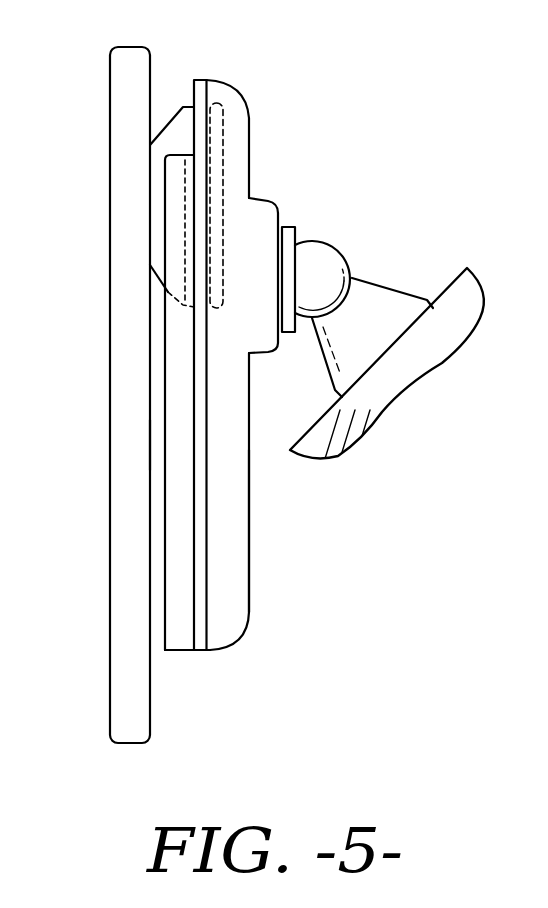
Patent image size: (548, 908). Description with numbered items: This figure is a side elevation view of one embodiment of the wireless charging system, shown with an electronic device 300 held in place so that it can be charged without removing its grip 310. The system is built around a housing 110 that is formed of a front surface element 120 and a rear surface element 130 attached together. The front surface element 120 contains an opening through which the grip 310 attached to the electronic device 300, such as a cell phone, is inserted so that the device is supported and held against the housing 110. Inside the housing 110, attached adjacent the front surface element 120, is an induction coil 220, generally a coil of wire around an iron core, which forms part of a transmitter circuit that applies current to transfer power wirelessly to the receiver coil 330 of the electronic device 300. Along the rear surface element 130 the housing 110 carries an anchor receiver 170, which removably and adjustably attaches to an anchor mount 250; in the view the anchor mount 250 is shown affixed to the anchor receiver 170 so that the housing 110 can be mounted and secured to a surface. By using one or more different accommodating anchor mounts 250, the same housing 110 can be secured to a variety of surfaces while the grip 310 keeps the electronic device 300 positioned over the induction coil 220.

The housing 110 is at (213, 88).
The front surface element 120 is at (160, 628).
The rear surface element 130 is at (252, 577).
The anchor receiver 170 is at (288, 225).
The induction coil 220 is at (178, 385).
The anchor mount 250 is at (338, 246).
The electronic device 300 is at (110, 673).
The grip 310 is at (170, 117).
The receiver coil 330 is at (116, 443).